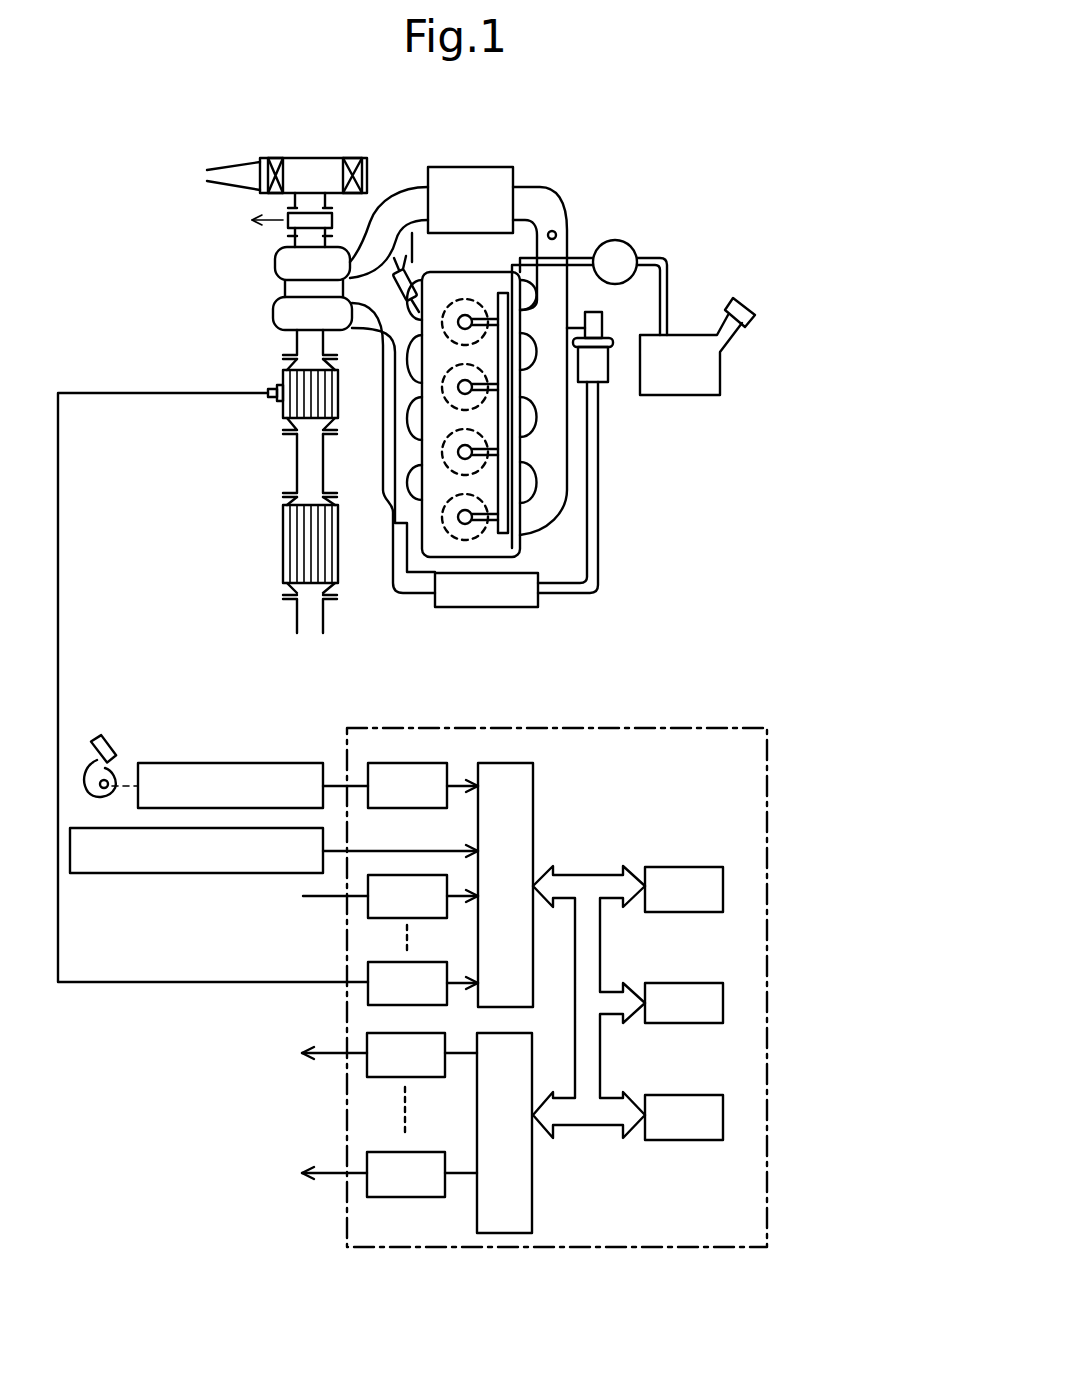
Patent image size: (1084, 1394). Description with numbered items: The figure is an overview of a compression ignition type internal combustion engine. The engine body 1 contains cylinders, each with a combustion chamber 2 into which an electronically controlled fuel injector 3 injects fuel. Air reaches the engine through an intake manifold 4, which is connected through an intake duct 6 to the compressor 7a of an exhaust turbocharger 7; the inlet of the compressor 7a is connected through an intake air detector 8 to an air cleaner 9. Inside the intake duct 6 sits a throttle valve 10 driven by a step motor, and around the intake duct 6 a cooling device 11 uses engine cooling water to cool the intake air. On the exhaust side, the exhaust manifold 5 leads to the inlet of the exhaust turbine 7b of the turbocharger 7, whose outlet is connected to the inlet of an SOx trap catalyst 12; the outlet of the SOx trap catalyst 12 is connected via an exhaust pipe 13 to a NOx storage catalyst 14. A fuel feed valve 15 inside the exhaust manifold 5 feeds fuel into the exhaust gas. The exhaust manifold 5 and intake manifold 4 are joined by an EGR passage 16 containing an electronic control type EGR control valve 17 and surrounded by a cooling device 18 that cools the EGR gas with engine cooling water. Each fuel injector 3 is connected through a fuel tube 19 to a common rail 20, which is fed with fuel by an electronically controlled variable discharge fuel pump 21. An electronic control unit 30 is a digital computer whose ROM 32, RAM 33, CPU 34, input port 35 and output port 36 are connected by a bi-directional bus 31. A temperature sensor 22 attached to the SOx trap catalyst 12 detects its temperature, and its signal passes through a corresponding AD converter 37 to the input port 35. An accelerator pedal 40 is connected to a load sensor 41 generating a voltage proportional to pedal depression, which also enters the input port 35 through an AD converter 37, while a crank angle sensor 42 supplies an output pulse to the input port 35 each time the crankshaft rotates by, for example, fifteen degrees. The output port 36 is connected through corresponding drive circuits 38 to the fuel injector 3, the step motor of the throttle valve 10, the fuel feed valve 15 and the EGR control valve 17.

The engine body 1 is at (495, 410).
The combustion chamber 2 is at (452, 338).
The fuel injector 3 is at (463, 313).
The intake manifold 4 is at (556, 503).
The exhaust manifold 5 is at (388, 487).
The intake duct 6 is at (542, 202).
The exhaust turbocharger 7 is at (257, 286).
The compressor 7a is at (278, 265).
The exhaust turbine 7b is at (277, 313).
The intake air detector 8 is at (290, 233).
The air cleaner 9 is at (302, 167).
The throttle valve 10 is at (555, 231).
The cooling device 11 is at (485, 167).
The SOx trap catalyst 12 is at (290, 383).
The exhaust pipe 13 is at (295, 465).
The NOx storage catalyst 14 is at (290, 555).
The fuel feed valve 15 is at (398, 279).
The EGR passage 16 is at (600, 470).
The EGR control valve 17 is at (603, 326).
The cooling device 18 is at (495, 609).
The fuel tube 19 is at (489, 307).
The common rail 20 is at (505, 423).
The variable discharge fuel pump 21 is at (631, 246).
The temperature sensor 22 is at (270, 400).
The electronic control unit 30 is at (780, 754).
The bi-directional bus 31 is at (587, 881).
The ROM 32 is at (683, 867).
The RAM 33 is at (683, 983).
The CPU 34 is at (681, 1095).
The input port 35 is at (510, 762).
The output port 36 is at (533, 1174).
The AD converter 37 is at (407, 762).
The drive circuit 38 is at (366, 1160).
The accelerator pedal 40 is at (108, 748).
The load sensor 41 is at (288, 762).
The crank angle sensor 42 is at (193, 875).